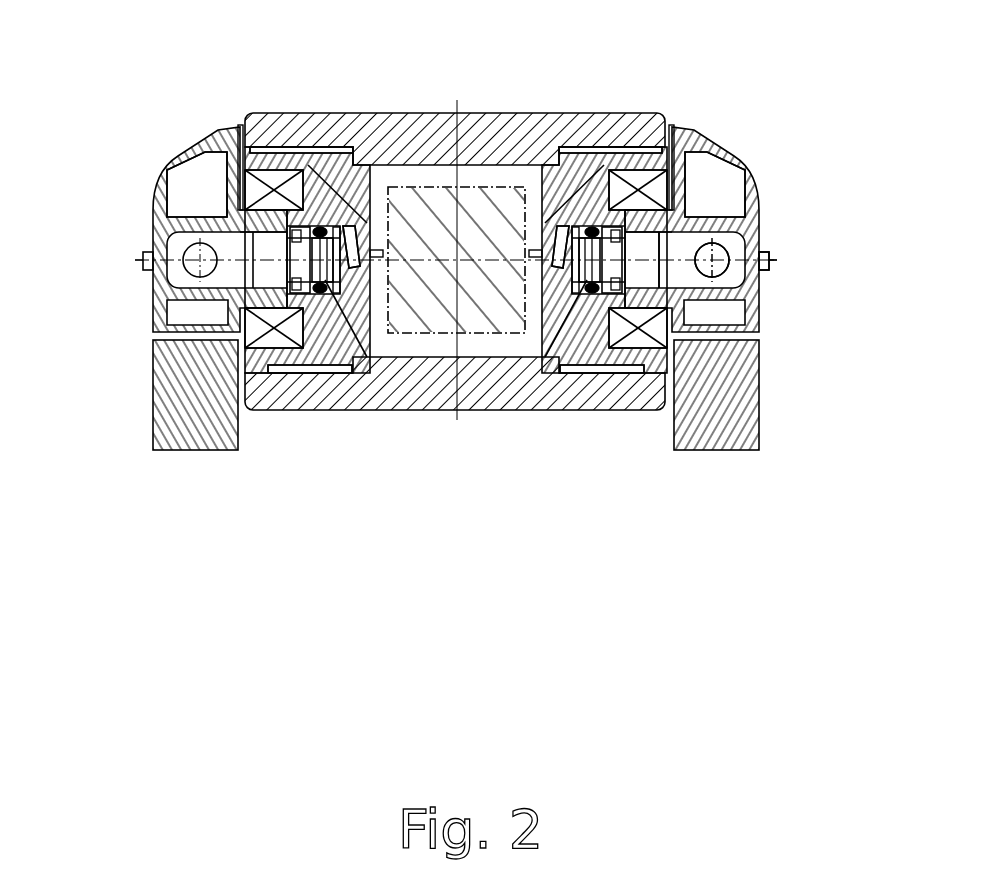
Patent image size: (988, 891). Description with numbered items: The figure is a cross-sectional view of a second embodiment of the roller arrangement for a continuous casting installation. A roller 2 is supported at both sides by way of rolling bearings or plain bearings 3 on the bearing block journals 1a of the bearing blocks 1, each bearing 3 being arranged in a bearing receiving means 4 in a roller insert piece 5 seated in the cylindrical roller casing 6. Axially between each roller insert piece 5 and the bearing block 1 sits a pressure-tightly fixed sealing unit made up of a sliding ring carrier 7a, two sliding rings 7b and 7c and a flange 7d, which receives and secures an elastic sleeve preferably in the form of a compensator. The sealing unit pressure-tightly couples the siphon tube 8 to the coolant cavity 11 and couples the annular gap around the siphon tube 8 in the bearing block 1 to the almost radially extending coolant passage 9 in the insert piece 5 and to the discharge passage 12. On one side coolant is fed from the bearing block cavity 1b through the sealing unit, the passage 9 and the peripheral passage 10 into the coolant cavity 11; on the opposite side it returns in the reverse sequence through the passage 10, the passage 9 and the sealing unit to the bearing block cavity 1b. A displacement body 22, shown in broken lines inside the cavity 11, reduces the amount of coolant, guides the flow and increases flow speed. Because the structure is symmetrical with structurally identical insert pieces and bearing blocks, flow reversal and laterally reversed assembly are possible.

The bearing block 1 is at (187, 412).
The bearing block journal 1a is at (267, 218).
The bearing block cavity 1b is at (212, 170).
The roller 2 is at (405, 113).
The rolling bearing 3 is at (273, 174).
The rolling bearing receiving means 4 is at (232, 135).
The roller insert piece 5 is at (613, 172).
The roller casing 6 is at (632, 148).
The sliding ring carrier 7a is at (580, 275).
The sliding ring 7b is at (592, 272).
The sliding ring 7c is at (590, 285).
The flange 7d is at (608, 293).
The siphon tube 8 is at (722, 252).
The coolant passage in the insert piece 9 is at (353, 230).
The peripheral passage 10 is at (573, 150).
The coolant cavity 11 is at (447, 185).
The discharge passage 12 is at (733, 275).
The displacement body 22 is at (428, 325).